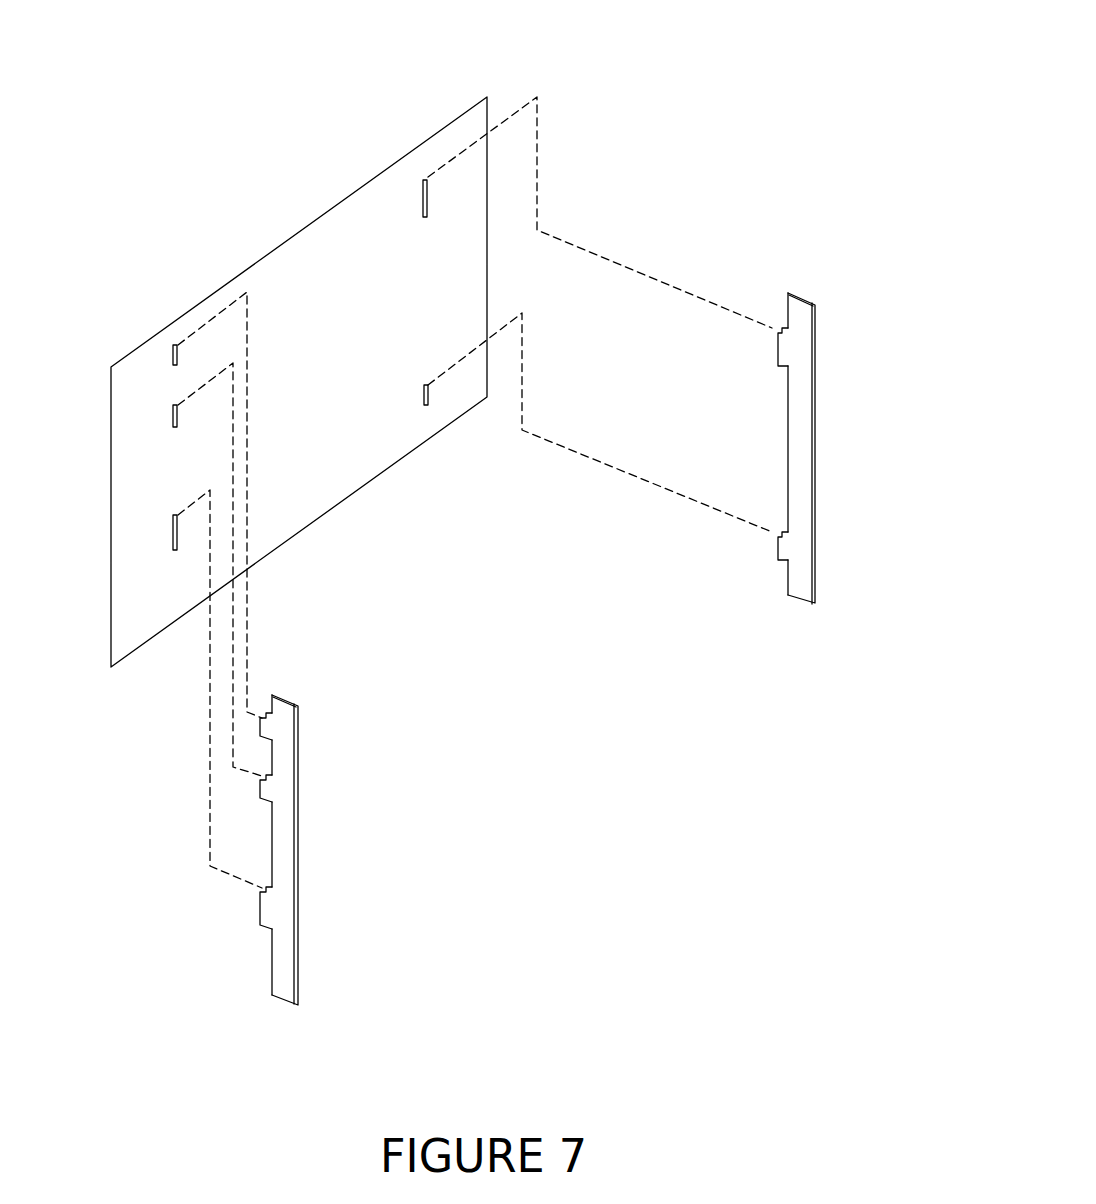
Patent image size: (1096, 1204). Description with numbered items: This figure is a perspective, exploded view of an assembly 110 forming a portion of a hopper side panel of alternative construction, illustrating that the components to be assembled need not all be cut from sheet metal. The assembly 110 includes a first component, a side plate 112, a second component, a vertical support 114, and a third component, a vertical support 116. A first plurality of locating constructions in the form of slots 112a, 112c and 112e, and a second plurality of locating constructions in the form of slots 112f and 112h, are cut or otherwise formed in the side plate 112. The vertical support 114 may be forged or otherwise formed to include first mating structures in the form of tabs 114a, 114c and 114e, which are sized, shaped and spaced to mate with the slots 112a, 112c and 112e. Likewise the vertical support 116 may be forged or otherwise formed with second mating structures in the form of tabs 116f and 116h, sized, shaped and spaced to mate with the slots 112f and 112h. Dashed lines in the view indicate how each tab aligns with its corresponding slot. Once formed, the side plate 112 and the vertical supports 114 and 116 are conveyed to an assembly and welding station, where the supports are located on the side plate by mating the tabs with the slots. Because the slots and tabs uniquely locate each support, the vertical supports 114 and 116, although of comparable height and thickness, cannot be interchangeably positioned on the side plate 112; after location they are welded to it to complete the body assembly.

The assembly 110 is at (665, 55).
The side plate 112 is at (311, 222).
The slot 112a is at (170, 358).
The slot 112c is at (170, 422).
The slot 112e is at (170, 540).
The slot 112f is at (418, 208).
The slot 112h is at (420, 398).
The vertical support 114 is at (298, 828).
The tab 114a is at (260, 733).
The tab 114c is at (260, 797).
The tab 114e is at (260, 913).
The vertical support 116 is at (817, 427).
The tab 116f is at (778, 352).
The tab 116h is at (777, 553).